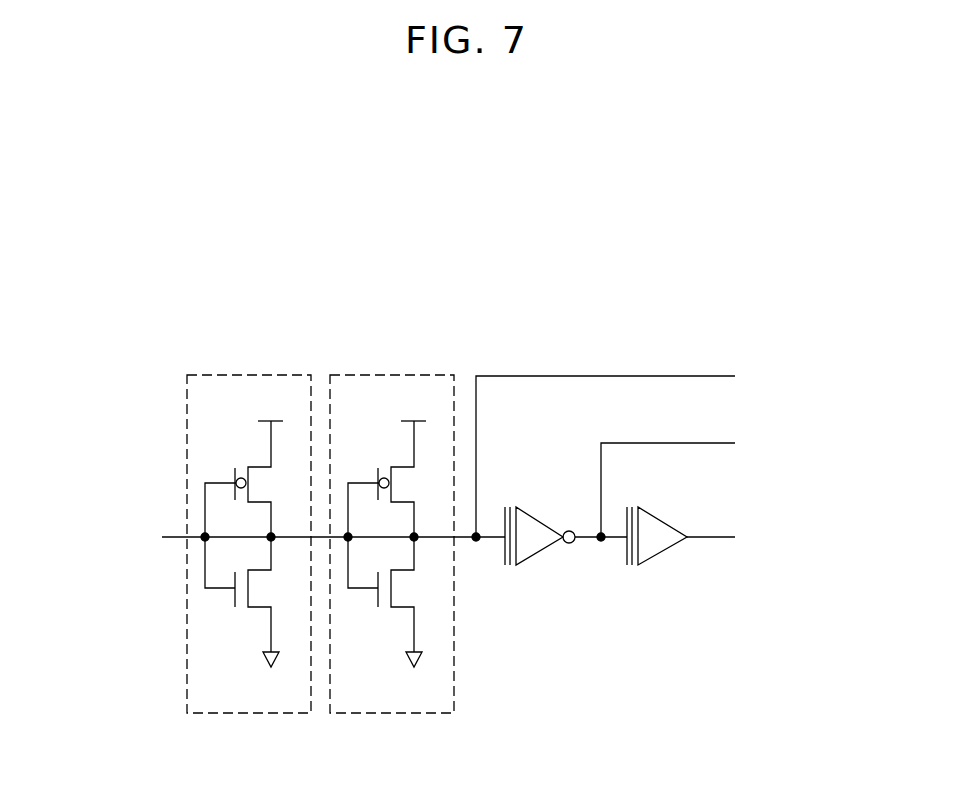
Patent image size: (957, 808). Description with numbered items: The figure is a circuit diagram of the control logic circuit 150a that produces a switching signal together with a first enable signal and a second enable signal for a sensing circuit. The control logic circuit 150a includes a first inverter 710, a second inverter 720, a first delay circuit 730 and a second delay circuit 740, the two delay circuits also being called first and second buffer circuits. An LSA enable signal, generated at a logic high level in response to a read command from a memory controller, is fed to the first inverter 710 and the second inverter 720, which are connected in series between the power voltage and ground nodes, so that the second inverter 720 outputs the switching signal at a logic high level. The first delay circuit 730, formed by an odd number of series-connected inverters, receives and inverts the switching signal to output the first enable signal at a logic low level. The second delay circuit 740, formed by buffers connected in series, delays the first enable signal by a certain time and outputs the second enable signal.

The control logic circuit 150a is at (694, 277).
The first inverter 710 is at (248, 373).
The second inverter 720 is at (391, 373).
The first delay circuit 730 is at (541, 521).
The second delay circuit 740 is at (663, 521).